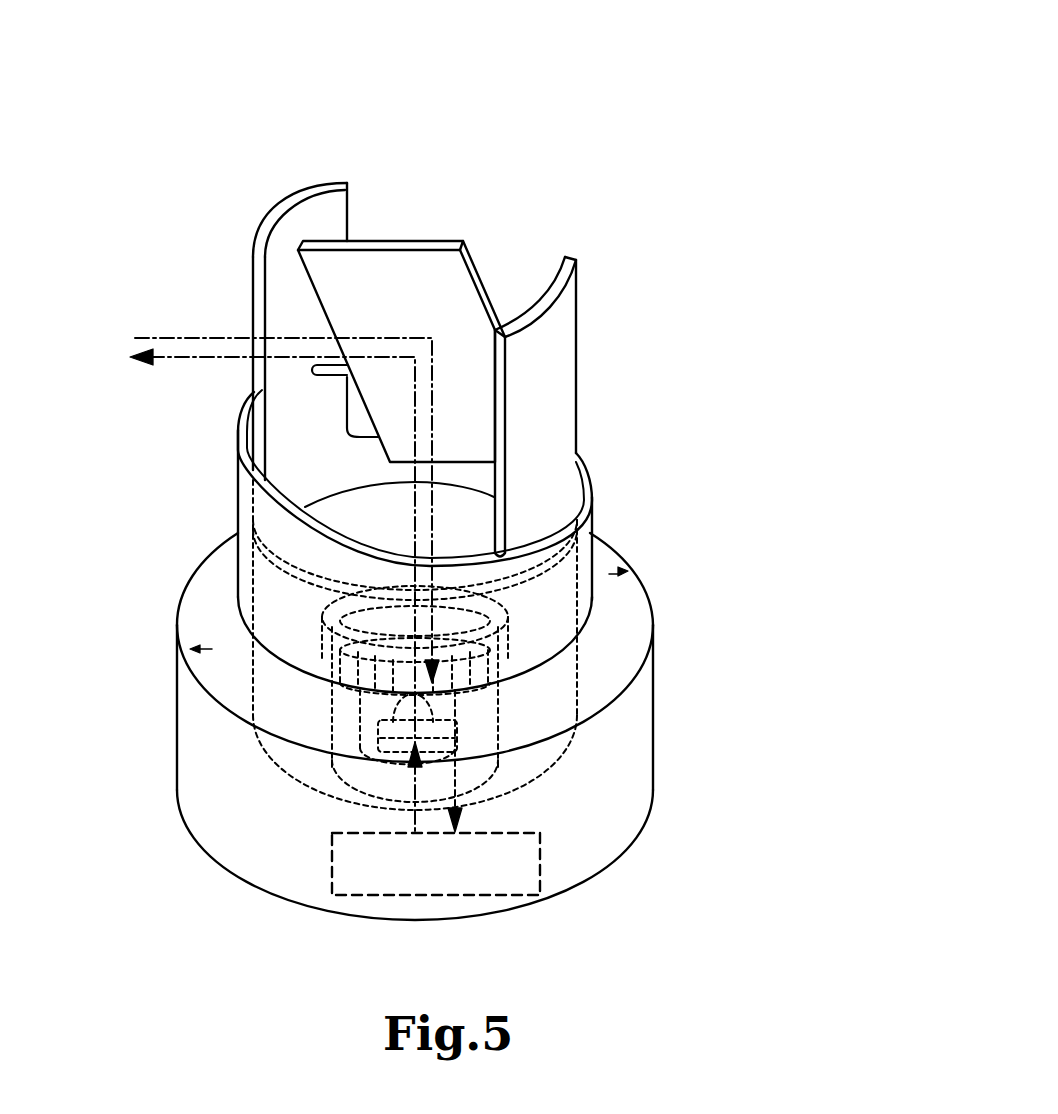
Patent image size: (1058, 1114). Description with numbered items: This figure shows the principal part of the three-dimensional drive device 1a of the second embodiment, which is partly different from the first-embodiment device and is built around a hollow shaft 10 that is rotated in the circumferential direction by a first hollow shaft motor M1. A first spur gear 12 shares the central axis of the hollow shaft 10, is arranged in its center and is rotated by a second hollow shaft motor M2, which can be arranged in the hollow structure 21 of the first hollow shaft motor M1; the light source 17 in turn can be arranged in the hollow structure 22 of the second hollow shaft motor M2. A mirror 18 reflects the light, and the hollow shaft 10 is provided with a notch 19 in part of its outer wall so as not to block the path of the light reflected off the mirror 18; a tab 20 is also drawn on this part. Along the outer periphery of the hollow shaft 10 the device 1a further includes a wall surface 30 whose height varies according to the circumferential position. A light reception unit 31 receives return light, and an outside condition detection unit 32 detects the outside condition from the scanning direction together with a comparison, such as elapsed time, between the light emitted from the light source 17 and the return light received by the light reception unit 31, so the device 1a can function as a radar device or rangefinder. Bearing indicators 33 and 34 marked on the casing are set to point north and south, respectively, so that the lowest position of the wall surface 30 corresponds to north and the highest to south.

The three-dimensional drive device 1a is at (626, 108).
The hollow shaft 10 is at (557, 430).
The first spur gear 12 is at (494, 597).
The light source 17 is at (390, 728).
The mirror 18 is at (452, 240).
The notch 19 is at (262, 440).
The tab 20 is at (328, 371).
The hollow structure 21 is at (318, 786).
The hollow structure 22 is at (330, 757).
The wall surface 30 is at (593, 497).
The light reception unit 31 is at (578, 652).
The outside condition detection unit 32 is at (540, 862).
The bearing indicator 33 is at (212, 649).
The bearing indicator 34 is at (614, 579).
The first hollow shaft motor M1 is at (654, 720).
The second hollow shaft motor M2 is at (493, 782).